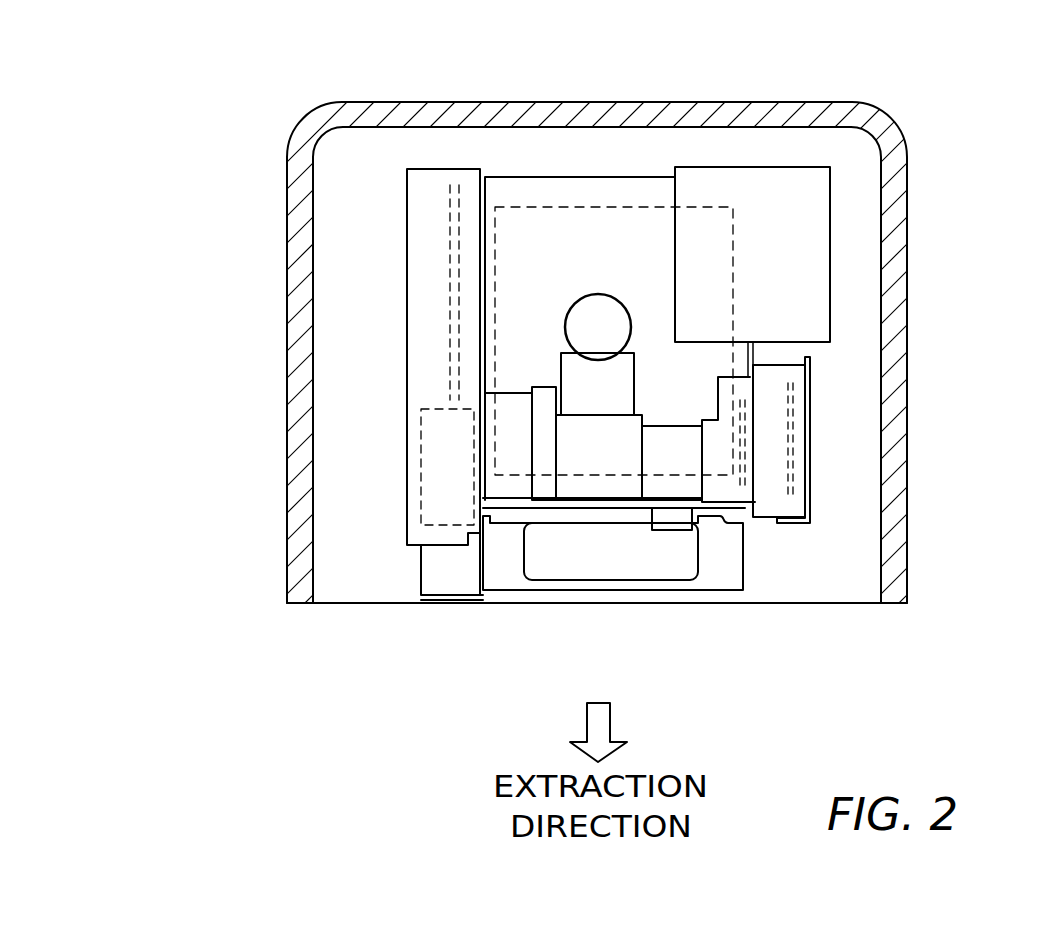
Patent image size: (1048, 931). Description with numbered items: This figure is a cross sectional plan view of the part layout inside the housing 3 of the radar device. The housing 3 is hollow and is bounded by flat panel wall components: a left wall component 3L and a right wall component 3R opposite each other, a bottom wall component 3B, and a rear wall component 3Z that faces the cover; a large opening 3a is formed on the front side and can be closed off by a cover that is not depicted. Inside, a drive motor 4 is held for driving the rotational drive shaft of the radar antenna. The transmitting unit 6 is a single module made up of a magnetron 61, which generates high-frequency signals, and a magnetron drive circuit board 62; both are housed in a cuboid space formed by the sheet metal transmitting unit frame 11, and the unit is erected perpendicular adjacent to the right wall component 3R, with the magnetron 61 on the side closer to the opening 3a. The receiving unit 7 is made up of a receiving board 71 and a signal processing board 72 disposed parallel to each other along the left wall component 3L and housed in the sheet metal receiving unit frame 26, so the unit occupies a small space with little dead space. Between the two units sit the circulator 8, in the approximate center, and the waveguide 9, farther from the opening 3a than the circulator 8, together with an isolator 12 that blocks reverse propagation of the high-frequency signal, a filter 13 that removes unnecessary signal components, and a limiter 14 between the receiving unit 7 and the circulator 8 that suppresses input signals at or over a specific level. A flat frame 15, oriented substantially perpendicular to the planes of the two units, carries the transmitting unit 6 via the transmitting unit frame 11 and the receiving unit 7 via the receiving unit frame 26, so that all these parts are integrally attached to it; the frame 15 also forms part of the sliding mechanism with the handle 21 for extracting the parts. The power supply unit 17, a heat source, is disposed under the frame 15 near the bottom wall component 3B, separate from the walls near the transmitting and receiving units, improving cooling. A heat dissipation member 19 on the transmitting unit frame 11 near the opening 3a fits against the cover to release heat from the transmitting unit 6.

The housing 3 is at (240, 125).
The bottom wall component 3B is at (365, 185).
The right wall component 3R is at (297, 228).
The left wall component 3L is at (897, 225).
The rear wall component 3Z is at (790, 112).
The opening 3a is at (870, 603).
The drive motor 4 is at (820, 280).
The transmitting unit 6 is at (348, 378).
The receiving unit 7 is at (860, 437).
The circulator 8 is at (599, 490).
The waveguide 9 is at (599, 387).
The transmitting unit frame 11 is at (408, 520).
The isolator 12 is at (516, 493).
The filter 13 is at (545, 490).
The limiter 14 is at (674, 490).
The frame 15 is at (528, 185).
The power supply unit 17 is at (657, 208).
The heat dissipation member 19 is at (449, 603).
The handle 21 is at (722, 583).
The receiving unit frame 26 is at (770, 497).
The magnetron 61 is at (421, 465).
The magnetron drive circuit board 62 is at (448, 290).
The receiving board 71 is at (763, 474).
The signal processing board 72 is at (793, 445).